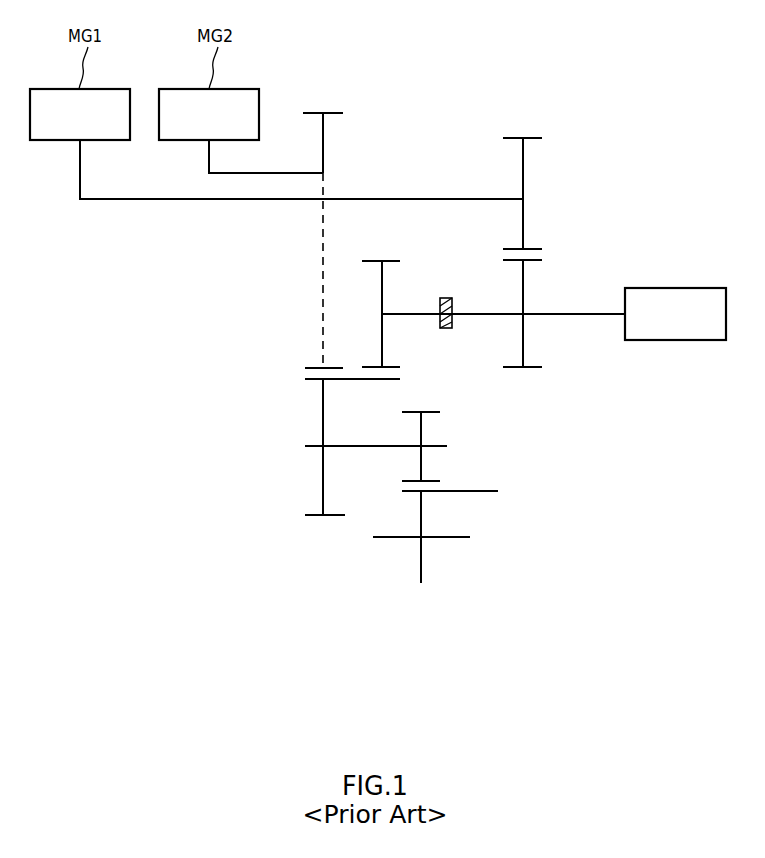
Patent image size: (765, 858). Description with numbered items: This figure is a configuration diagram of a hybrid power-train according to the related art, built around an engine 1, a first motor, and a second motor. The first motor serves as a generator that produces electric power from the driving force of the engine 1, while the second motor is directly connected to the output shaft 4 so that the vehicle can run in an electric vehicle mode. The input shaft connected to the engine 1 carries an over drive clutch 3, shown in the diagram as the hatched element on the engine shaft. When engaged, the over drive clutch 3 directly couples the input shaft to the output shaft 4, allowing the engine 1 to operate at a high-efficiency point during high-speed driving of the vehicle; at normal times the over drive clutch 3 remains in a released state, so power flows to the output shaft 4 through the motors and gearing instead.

The engine 1 is at (675, 288).
The over drive clutch 3 is at (452, 329).
The output shaft 4 is at (384, 540).